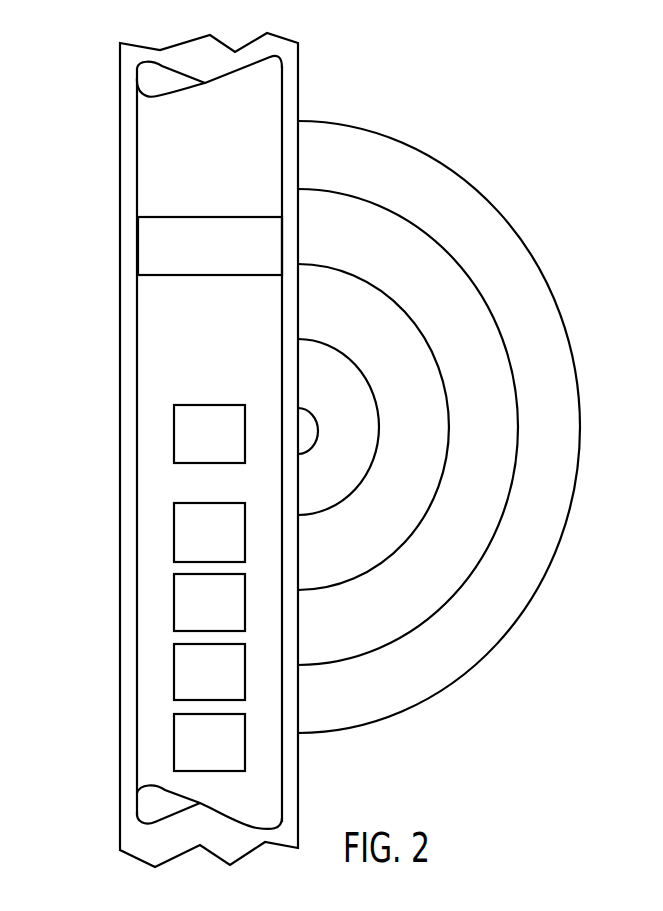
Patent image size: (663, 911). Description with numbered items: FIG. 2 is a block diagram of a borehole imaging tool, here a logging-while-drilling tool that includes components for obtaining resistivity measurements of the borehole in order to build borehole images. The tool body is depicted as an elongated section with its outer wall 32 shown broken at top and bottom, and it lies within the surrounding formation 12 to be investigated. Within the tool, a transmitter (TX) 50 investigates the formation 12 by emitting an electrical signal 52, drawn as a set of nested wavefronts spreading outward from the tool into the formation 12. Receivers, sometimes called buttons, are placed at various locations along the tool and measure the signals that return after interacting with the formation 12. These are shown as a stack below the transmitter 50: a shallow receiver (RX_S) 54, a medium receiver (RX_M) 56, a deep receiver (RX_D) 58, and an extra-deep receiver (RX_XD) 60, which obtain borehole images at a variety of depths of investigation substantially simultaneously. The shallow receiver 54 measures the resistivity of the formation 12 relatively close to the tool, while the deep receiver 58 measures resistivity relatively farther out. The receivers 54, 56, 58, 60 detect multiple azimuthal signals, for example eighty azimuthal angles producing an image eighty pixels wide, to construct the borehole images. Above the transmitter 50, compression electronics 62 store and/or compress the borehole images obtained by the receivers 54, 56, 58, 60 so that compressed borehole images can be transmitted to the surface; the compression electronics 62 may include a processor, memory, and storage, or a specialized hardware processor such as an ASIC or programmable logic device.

The formation 12 is at (56, 533).
The casing 32 is at (180, 60).
The transmitter (TX) 50 is at (174, 417).
The electrical signal 52 is at (530, 204).
The shallow receiver (RX_S) 54 is at (174, 525).
The medium receiver (RX_M) 56 is at (174, 595).
The deep receiver (RX_D) 58 is at (174, 666).
The extra-deep receiver (RX_XD) 60 is at (174, 736).
The compression electronics 62 is at (228, 216).